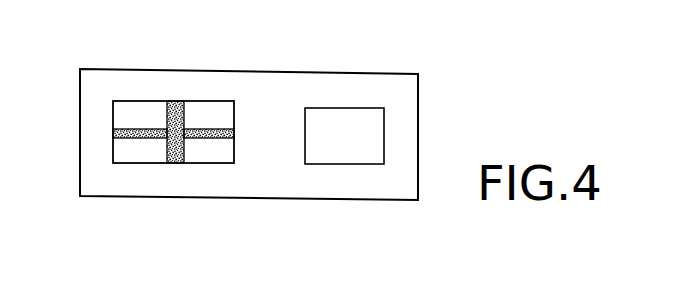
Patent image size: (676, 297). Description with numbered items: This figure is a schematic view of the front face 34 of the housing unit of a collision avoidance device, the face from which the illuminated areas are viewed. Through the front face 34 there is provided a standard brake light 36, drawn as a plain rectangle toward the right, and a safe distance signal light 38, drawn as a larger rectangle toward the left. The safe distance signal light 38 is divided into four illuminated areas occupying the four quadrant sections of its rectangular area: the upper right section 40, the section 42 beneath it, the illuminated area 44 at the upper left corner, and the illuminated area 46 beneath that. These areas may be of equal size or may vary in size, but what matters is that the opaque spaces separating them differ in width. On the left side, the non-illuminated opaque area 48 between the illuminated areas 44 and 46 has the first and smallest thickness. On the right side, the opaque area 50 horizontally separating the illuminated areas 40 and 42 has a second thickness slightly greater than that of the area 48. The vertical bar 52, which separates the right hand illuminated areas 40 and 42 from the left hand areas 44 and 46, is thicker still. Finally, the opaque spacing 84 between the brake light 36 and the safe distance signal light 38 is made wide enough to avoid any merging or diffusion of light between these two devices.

The front face 34 is at (363, 80).
The brake light 36 is at (373, 132).
The safe distance signal light 38 is at (140, 96).
The upper right section 40 is at (198, 112).
The section 42 is at (212, 156).
The illuminated area 44 is at (123, 113).
The illuminated area 46 is at (145, 152).
The opaque area 48 is at (130, 135).
The opaque area 50 is at (218, 130).
The vertical bar 52 is at (177, 110).
The opaque spacing 84 is at (272, 118).